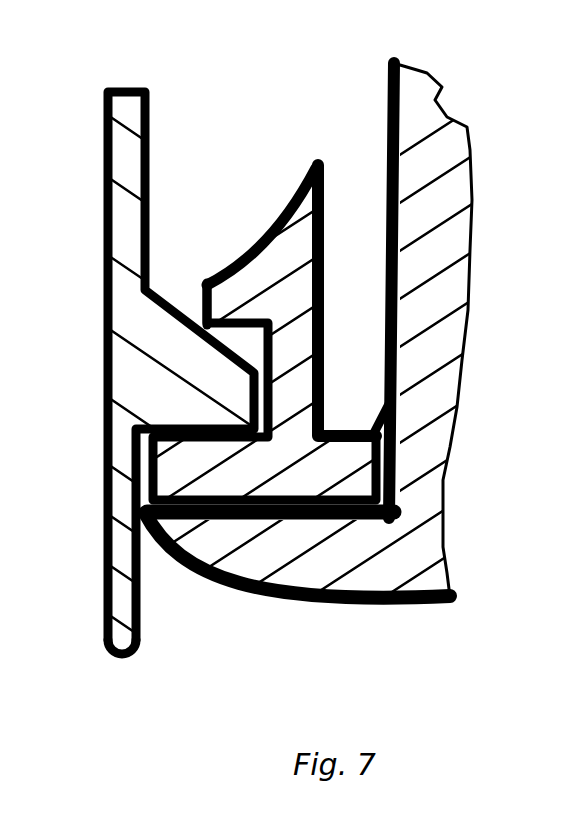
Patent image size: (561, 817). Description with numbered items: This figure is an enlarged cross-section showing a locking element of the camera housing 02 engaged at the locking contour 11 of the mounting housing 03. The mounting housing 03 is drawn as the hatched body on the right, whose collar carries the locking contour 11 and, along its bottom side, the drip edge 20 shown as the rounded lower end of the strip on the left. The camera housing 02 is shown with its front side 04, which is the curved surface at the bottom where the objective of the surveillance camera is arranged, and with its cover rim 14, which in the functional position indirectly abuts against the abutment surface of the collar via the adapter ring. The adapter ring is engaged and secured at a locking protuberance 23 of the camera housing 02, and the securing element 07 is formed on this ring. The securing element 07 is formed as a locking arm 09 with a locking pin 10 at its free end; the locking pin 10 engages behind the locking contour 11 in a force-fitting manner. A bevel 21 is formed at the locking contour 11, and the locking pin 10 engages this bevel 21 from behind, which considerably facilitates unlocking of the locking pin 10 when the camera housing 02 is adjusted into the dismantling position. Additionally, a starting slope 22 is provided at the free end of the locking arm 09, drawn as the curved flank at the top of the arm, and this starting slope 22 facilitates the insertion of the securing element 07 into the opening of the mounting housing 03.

The camera housing 02 is at (383, 578).
The mounting housing 03 is at (125, 308).
The front side 04 is at (268, 602).
The securing element 07 is at (329, 96).
The locking arm 09 is at (303, 355).
The locking pin 10 is at (290, 254).
The locking contour 11 is at (182, 305).
The cover rim 14 is at (208, 540).
The drip edge 20 is at (124, 655).
The bevel 21 is at (199, 308).
The starting slope 22 is at (274, 208).
The locking protuberance 23 is at (378, 418).